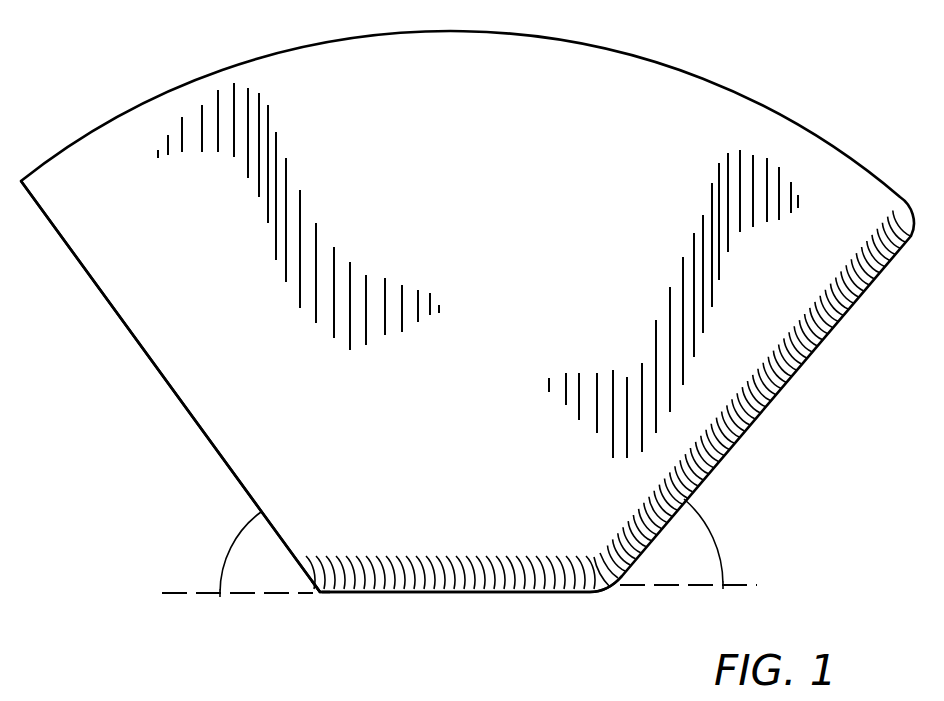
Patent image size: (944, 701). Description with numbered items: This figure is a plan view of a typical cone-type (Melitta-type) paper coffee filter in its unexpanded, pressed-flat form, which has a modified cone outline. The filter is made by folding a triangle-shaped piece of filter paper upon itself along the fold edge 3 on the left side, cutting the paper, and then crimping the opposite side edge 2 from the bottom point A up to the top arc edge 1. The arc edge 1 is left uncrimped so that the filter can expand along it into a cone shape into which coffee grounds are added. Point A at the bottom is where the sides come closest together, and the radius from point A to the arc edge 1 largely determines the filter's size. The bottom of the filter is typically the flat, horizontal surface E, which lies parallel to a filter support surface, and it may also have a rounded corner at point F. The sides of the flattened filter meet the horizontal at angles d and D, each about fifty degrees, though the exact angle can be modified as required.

The arc edge 1 is at (721, 80).
The crimped edge 2 is at (719, 470).
The fold edge 3 is at (231, 479).
The bottom point A is at (318, 597).
The bottom surface E is at (498, 594).
The rounded corner point F is at (615, 598).
The side angle d is at (222, 556).
The side angle D is at (719, 558).